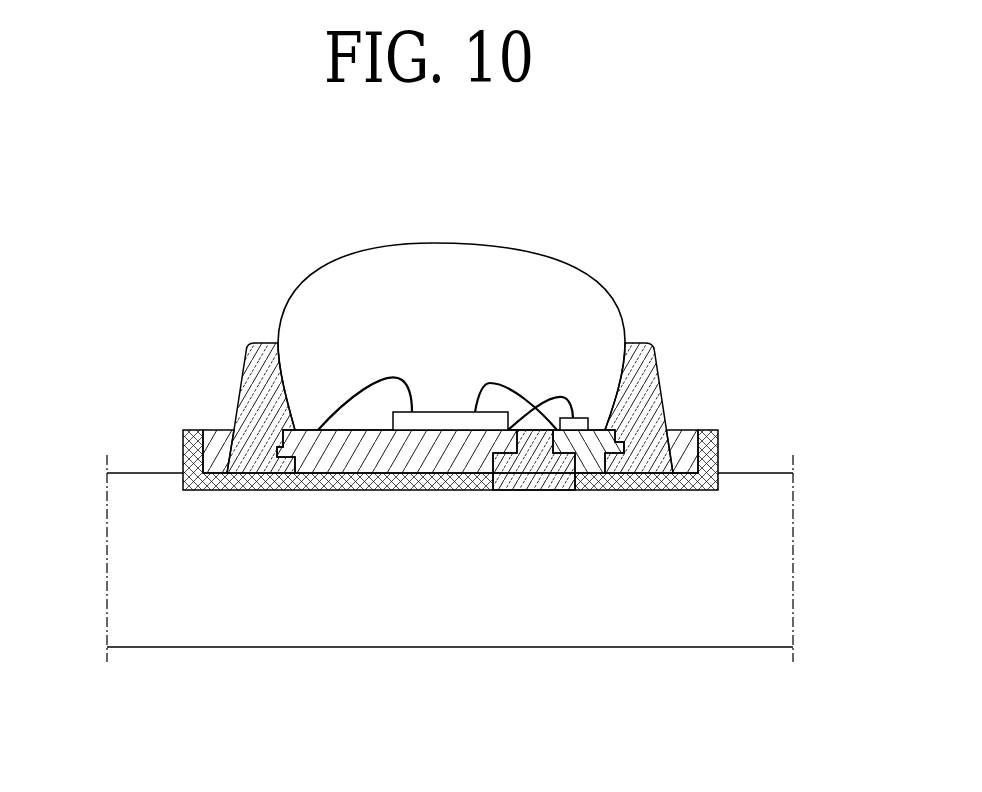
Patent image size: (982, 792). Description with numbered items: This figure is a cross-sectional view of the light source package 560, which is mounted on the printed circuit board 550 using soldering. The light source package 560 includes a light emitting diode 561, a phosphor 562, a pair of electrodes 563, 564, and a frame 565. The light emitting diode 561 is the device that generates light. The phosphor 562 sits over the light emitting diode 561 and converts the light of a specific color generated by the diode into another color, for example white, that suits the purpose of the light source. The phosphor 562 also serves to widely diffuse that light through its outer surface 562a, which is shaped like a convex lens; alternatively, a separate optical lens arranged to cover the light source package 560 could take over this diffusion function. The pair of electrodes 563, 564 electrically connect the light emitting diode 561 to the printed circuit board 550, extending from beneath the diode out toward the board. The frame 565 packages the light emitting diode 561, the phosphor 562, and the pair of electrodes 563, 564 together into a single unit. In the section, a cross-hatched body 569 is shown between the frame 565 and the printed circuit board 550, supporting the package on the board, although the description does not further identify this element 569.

The printed circuit board 550 is at (127, 563).
The light source package 560 is at (297, 261).
The light emitting diode 561 is at (455, 410).
The phosphor 562 is at (585, 320).
The outer surface 562a is at (580, 257).
The electrode 563 is at (213, 430).
The electrode 564 is at (684, 430).
The frame 565 is at (252, 380).
The support base 569 is at (183, 435).